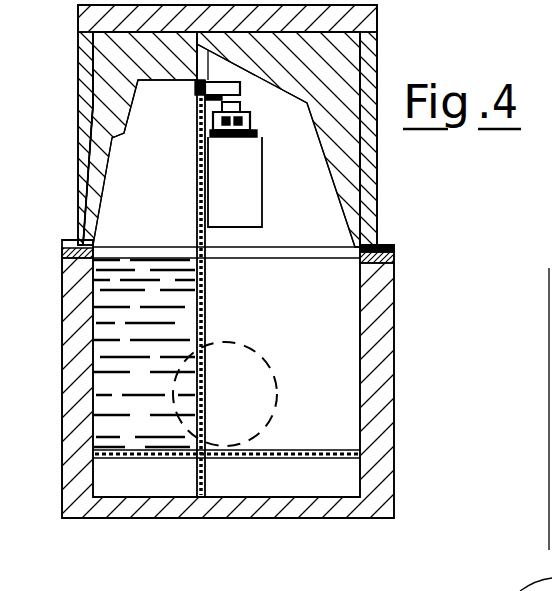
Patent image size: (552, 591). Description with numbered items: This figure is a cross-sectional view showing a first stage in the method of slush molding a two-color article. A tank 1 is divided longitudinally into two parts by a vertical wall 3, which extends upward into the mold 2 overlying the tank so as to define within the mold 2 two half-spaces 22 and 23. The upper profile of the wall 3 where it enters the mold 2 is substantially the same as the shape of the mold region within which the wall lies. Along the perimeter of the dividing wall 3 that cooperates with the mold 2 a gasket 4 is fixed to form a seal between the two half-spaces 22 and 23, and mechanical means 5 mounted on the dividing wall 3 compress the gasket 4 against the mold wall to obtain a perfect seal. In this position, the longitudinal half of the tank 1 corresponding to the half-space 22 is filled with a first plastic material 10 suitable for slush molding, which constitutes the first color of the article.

The tank 1 is at (395, 380).
The mold 2 is at (378, 40).
The vertical wall 3 is at (208, 292).
The gasket 4 is at (193, 87).
The mechanical means 5 is at (250, 125).
The first plastic material 10 is at (120, 368).
The half-space 22 is at (122, 196).
The half-space 23 is at (356, 205).